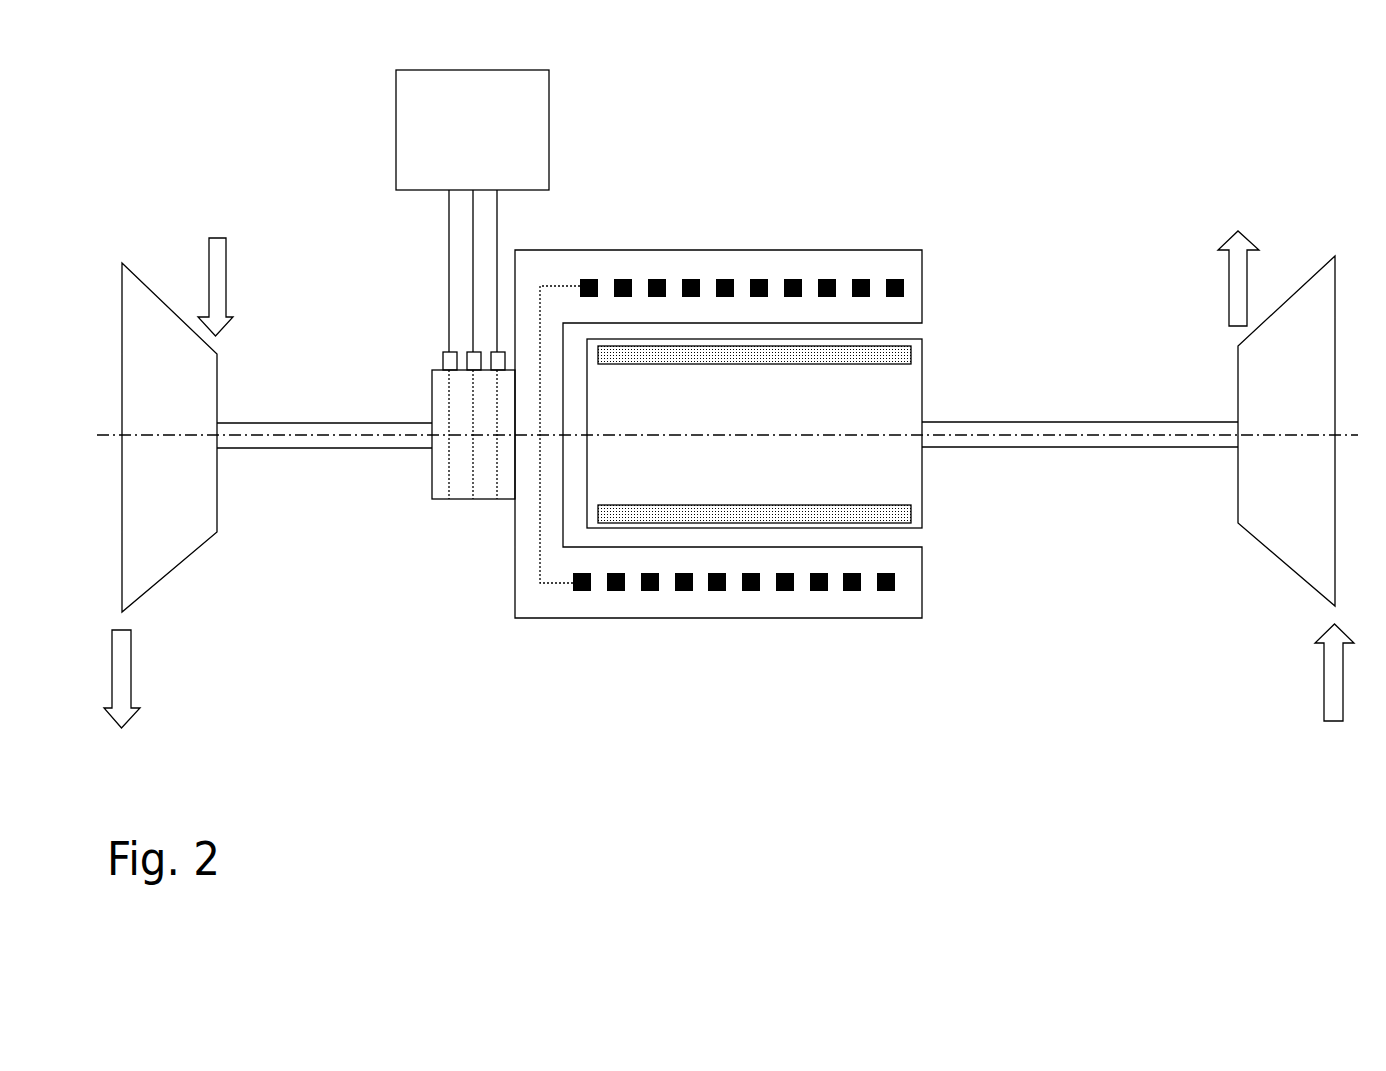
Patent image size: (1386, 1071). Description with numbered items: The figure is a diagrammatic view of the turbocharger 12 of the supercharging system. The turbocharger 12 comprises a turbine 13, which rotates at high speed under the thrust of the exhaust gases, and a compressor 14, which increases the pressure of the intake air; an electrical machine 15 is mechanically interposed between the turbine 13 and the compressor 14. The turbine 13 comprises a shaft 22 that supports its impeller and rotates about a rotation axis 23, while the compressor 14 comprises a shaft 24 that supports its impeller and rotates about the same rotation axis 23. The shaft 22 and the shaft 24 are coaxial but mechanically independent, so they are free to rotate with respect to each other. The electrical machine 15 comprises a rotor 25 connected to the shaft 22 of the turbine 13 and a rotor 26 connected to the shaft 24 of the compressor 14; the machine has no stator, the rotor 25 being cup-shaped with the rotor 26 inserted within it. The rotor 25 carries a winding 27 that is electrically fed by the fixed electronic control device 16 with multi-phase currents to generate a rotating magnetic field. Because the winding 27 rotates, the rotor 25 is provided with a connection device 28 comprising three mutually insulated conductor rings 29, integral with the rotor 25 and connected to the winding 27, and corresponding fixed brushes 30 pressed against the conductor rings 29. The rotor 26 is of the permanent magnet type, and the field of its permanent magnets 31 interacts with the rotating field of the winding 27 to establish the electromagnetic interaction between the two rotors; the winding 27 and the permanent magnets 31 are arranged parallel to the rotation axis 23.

The turbocharger 12 is at (1248, 856).
The turbine 13 is at (183, 536).
The compressor 14 is at (1281, 533).
The electrical machine 15 is at (689, 102).
The electronic control device 16 is at (472, 211).
The shaft 22 is at (320, 433).
The rotation axis 23 is at (1172, 447).
The shaft 24 is at (1122, 420).
The rotor 25 is at (910, 263).
The rotor 26 is at (897, 475).
The winding 27 is at (725, 276).
The connection device 28 is at (468, 548).
The conductor rings 29 is at (447, 476).
The brushes 30 is at (443, 358).
The permanent magnets 31 is at (887, 352).